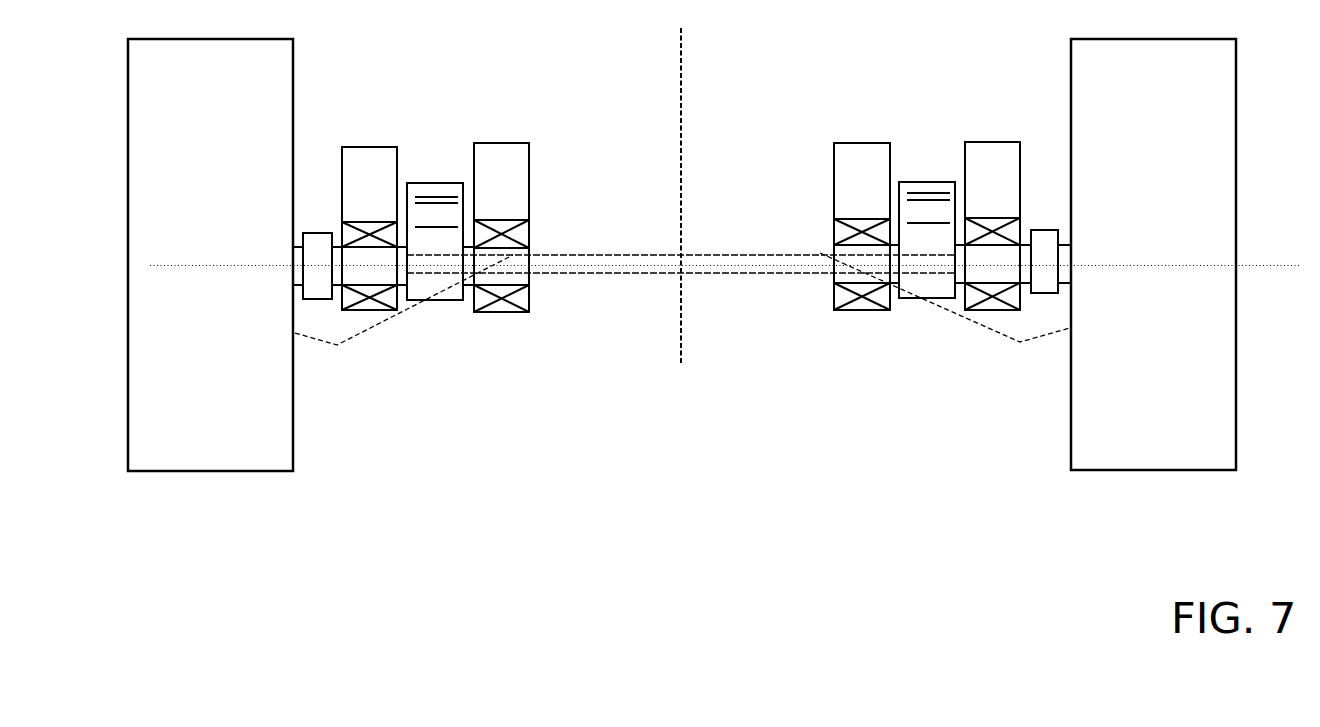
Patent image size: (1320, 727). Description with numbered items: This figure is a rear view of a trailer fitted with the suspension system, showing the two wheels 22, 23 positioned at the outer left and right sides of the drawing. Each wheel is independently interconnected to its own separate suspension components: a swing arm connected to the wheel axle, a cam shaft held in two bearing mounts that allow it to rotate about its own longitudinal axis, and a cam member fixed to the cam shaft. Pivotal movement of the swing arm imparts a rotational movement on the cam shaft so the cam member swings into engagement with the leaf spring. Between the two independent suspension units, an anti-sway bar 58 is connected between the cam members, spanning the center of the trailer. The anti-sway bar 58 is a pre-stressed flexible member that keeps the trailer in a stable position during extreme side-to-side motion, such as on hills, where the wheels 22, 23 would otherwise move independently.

The wheel 22 is at (236, 435).
The wheel 23 is at (1192, 432).
The anti-sway bar 58 is at (625, 273).